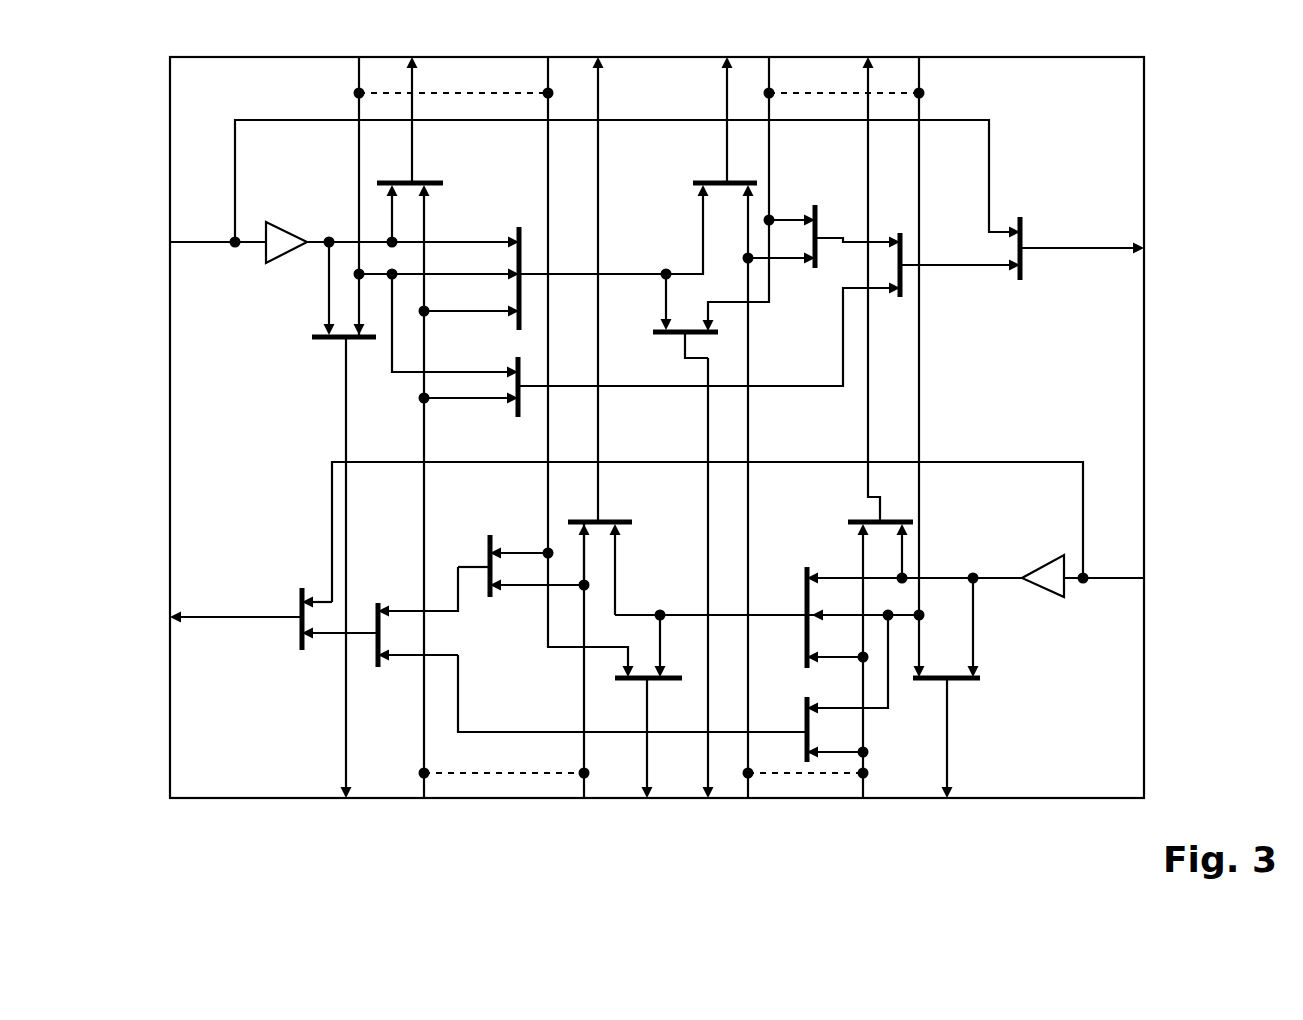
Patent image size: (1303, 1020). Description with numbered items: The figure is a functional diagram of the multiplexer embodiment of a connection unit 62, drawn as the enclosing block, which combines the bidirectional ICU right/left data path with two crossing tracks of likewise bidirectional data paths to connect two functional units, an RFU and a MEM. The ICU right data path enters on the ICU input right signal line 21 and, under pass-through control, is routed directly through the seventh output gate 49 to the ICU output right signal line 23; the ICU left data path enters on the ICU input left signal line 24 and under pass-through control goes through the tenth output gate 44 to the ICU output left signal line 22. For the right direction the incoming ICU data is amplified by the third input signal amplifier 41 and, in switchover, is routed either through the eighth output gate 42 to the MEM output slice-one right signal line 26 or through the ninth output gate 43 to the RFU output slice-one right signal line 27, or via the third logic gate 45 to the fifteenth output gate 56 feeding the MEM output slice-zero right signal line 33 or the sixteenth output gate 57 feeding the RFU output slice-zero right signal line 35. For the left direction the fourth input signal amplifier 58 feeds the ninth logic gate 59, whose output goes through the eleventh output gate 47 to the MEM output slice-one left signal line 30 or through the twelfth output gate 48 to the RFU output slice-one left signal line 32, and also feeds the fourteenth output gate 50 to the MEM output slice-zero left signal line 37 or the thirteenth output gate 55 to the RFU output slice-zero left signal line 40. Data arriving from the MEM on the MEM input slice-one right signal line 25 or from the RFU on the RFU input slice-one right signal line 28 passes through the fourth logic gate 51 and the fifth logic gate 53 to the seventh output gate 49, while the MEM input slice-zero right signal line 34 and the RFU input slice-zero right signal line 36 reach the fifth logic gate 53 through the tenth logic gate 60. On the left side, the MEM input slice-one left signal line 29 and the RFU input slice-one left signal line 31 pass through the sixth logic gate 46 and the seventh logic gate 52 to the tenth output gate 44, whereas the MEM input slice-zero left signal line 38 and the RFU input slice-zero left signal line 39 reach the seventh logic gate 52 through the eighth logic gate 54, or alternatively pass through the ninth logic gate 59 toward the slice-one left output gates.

The ICU_In_Right signal line 21 is at (574, 188).
The ICU_Out_Left signal line 22 is at (216, 617).
The ICU_Out_Right signal line 23 is at (1101, 248).
The ICU_In_Left signal line 24 is at (758, 547).
The MEM_In_Slc1_Right signal line 25 is at (446, 182).
The MEM_Out_Slc1_Right signal line 26 is at (414, 105).
The RFU_Out_Slc1_Right signal line 27 is at (348, 593).
The RFU_In_Slc1_Right signal line 28 is at (497, 580).
The MEM_In_Slc1_Left signal line 29 is at (582, 352).
The MEM_Out_Slc1_Left signal line 30 is at (597, 274).
The RFU_In_Slc1_Left signal line 31 is at (589, 686).
The RFU_Out_Slc1_Left signal line 32 is at (644, 835).
The MEM_Out_Slc0_Right signal line 33 is at (734, 105).
The MEM_In_Slc0_Right signal line 34 is at (811, 179).
The RFU_Out_Slc0_Right signal line 35 is at (714, 604).
The RFU_In_Slc0_Right signal line 36 is at (803, 552).
The MEM_Out_Slc0_Left signal line 37 is at (886, 274).
The MEM_In_Slc0_Left signal line 38 is at (932, 352).
The RFU_In_Slc0_Left signal line 39 is at (857, 687).
The RFU_Out_Slc0_Left signal line 40 is at (949, 835).
The third input signal amplifier 41 is at (392, 252).
The eighth output gate 42 is at (420, 227).
The ninth output gate 43 is at (349, 304).
The tenth output gate 44 is at (316, 631).
The third logic gate 45 is at (512, 263).
The sixth logic gate 46 is at (521, 577).
The eleventh output gate 47 is at (601, 552).
The twelfth output gate 48 is at (654, 706).
The seventh output gate 49 is at (1028, 248).
The fourteenth output gate 50 is at (874, 534).
The fourth logic gate 51 is at (646, 360).
The seventh logic gate 52 is at (380, 633).
The fifth logic gate 53 is at (947, 277).
The eighth logic gate 54 is at (673, 688).
The thirteenth output gate 55 is at (952, 688).
The fifteenth output gate 56 is at (713, 213).
The sixteenth output gate 57 is at (698, 320).
The fourth input signal amplifier 58 is at (938, 594).
The ninth logic gate 59 is at (767, 613).
The tenth logic gate 60 is at (824, 230).
The switch cell 62 is at (657, 427).